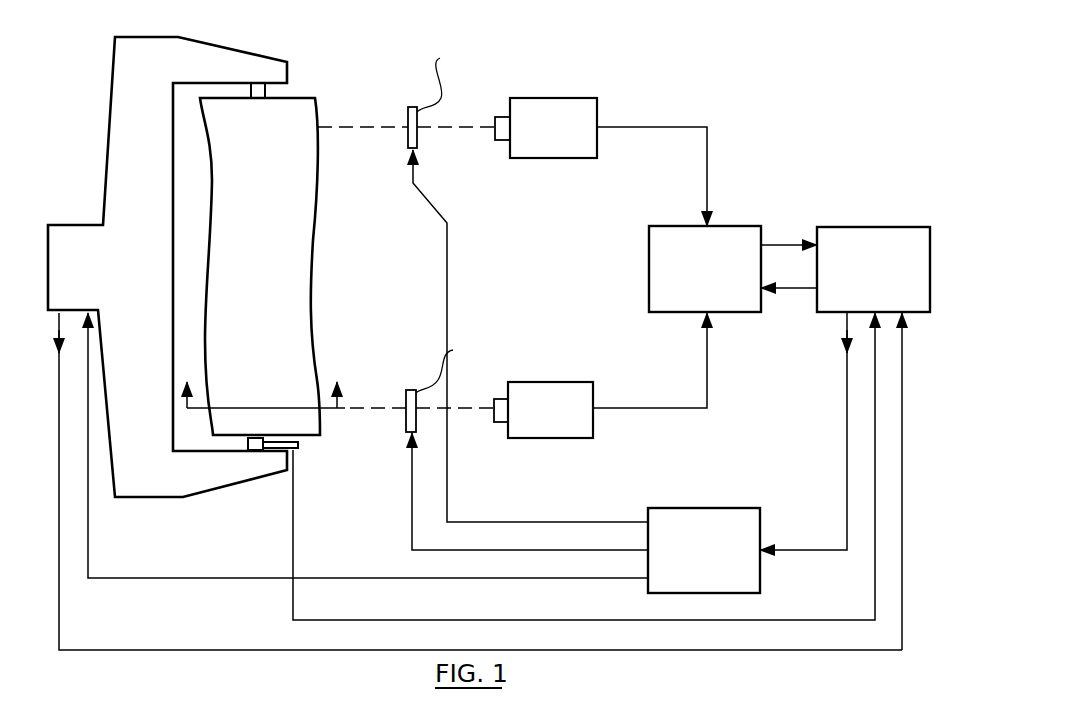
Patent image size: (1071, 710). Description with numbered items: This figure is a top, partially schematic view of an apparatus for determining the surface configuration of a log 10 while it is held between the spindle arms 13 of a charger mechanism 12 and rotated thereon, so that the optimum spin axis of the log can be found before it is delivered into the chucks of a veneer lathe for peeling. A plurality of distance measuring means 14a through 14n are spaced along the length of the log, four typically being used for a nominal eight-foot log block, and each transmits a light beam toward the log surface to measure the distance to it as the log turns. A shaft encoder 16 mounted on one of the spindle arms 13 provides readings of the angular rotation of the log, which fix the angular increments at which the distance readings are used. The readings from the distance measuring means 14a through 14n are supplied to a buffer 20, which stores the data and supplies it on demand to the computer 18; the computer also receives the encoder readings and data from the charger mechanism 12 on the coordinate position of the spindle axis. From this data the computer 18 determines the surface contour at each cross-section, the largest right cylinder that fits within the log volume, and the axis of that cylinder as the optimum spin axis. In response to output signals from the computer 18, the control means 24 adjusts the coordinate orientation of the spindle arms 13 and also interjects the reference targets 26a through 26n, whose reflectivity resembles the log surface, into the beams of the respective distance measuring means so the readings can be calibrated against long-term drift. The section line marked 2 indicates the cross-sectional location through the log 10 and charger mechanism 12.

The section line 2- 2 is at (263, 409).
The log 10 is at (308, 242).
The charger mechanism 12 is at (178, 47).
The spindle arms 13 is at (267, 90).
The distance measuring means 14a is at (593, 108).
The distance measuring means 14n is at (587, 428).
The shaft encoder 16 is at (299, 446).
The computer 18 is at (878, 230).
The buffer 20 is at (730, 232).
The control means 24 is at (745, 513).
The reference target 26a is at (417, 135).
The reference target 26n is at (406, 420).